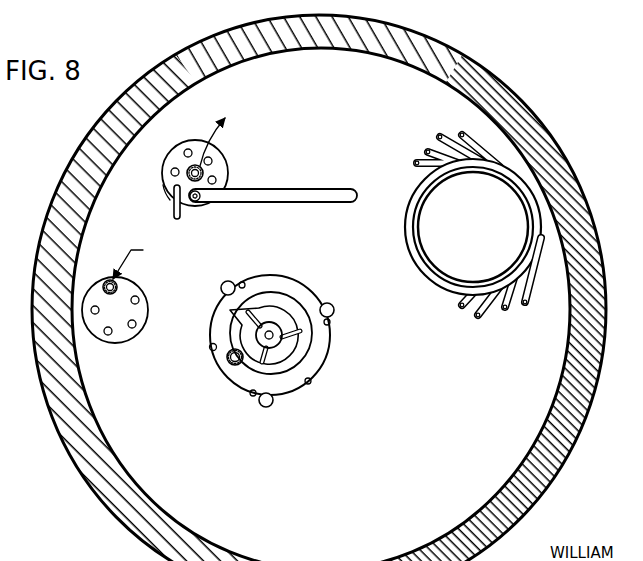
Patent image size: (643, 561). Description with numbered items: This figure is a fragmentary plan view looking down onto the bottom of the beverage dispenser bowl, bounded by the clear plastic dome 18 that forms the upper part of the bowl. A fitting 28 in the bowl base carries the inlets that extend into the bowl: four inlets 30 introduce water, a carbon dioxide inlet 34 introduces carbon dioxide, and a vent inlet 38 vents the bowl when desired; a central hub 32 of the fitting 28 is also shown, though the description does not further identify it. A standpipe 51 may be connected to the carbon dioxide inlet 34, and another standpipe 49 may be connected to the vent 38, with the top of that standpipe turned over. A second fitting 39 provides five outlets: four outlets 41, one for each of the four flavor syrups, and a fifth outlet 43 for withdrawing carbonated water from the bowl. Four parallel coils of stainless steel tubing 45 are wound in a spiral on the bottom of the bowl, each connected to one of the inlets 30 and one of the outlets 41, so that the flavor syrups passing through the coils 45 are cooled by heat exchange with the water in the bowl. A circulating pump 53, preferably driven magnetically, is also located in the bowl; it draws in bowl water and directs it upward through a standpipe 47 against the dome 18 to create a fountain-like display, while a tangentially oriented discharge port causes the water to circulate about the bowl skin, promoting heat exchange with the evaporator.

The clear plastic dome 18 is at (601, 380).
The fitting 28 is at (235, 170).
The inlets 30 is at (188, 148).
The hub bearing 32 is at (189, 168).
The carbon dioxide inlet 34 is at (164, 186).
The vent inlet 38 is at (201, 206).
The second fitting 39 is at (140, 308).
The outlets 41 is at (135, 322).
The carbonated water outlet 43 is at (108, 280).
The coils of stainless steel tubing 45 is at (420, 231).
The standpipe 47 is at (229, 363).
The standpipe 49 is at (320, 202).
The standpipe 51 is at (173, 209).
The circulating pump 53 is at (275, 341).